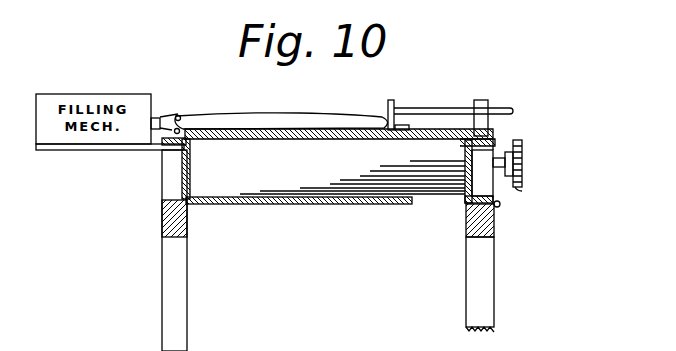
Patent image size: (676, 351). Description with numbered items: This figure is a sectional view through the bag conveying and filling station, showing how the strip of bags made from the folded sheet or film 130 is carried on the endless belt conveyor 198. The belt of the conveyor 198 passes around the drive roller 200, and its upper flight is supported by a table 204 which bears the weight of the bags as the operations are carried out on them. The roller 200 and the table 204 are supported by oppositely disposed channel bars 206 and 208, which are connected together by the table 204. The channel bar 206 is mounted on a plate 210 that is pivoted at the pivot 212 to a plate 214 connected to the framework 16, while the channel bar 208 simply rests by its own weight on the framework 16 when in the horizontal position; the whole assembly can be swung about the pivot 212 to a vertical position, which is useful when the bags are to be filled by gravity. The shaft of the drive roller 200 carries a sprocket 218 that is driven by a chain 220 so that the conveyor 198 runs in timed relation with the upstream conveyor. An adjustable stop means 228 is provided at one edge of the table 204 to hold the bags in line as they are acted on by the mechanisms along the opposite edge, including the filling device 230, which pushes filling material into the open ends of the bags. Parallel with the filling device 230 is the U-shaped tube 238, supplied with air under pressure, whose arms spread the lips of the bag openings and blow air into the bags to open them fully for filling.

The framework 16 is at (163, 294).
The sheet or film 130 is at (223, 117).
The endless belt conveyor 198 is at (403, 126).
The drive roller 200 is at (297, 180).
The table 204 is at (438, 133).
The channel bar 206 is at (497, 139).
The channel bar 208 is at (161, 207).
The plate 210 is at (465, 199).
The pivot 212 is at (500, 205).
The plate 214 is at (466, 209).
The sprocket 218 is at (518, 161).
The chain 220 is at (522, 191).
The adjustable stop means 228 is at (393, 100).
The filling device 230 is at (62, 151).
The U-shaped tube 238 is at (183, 112).